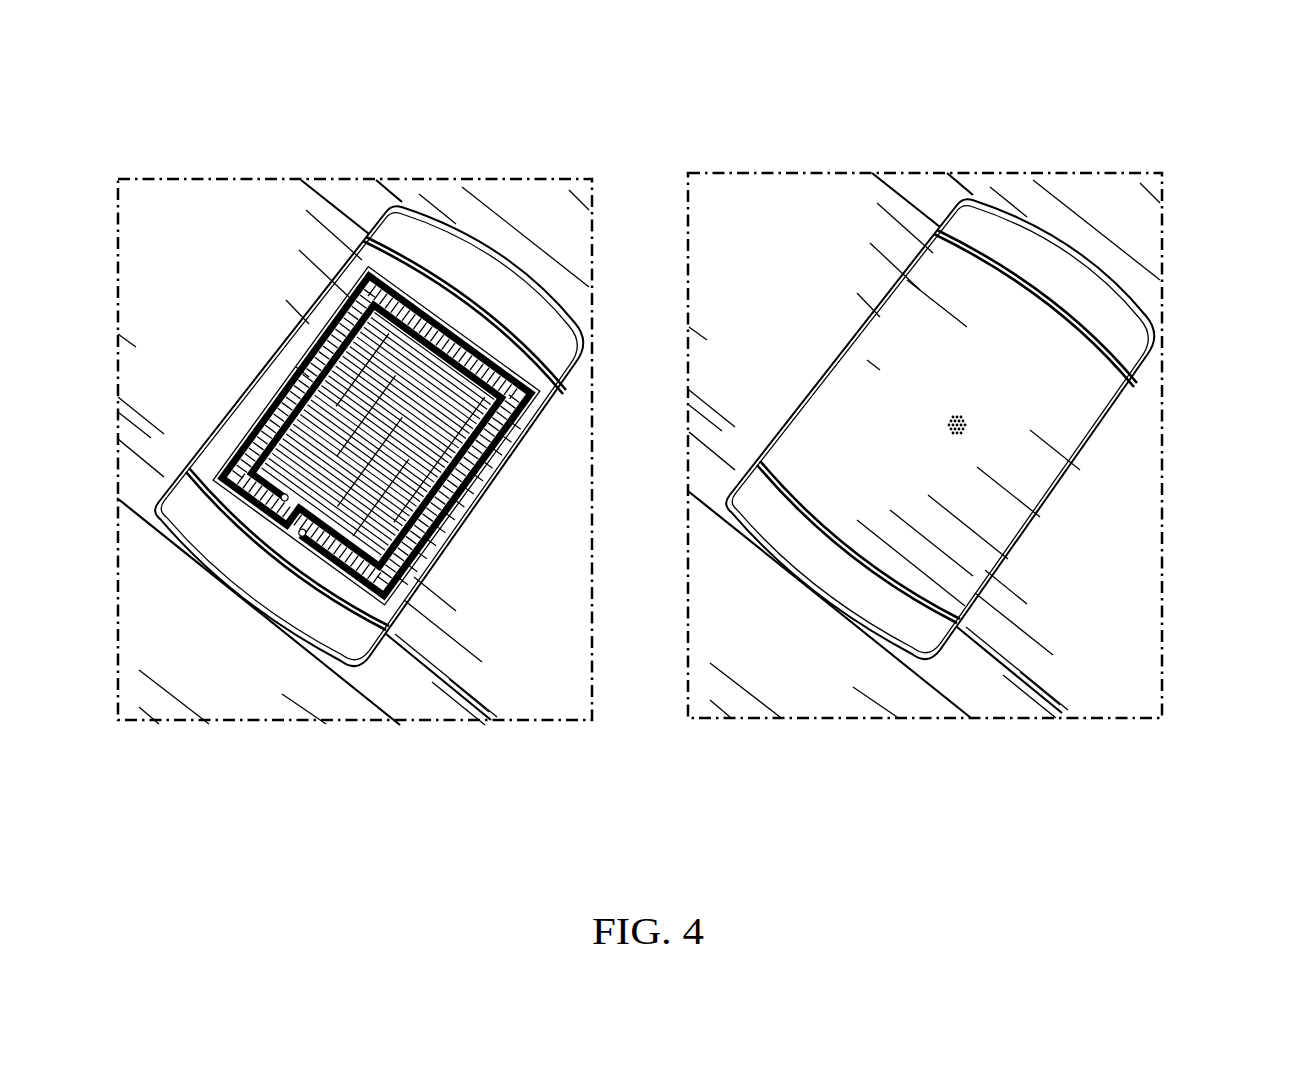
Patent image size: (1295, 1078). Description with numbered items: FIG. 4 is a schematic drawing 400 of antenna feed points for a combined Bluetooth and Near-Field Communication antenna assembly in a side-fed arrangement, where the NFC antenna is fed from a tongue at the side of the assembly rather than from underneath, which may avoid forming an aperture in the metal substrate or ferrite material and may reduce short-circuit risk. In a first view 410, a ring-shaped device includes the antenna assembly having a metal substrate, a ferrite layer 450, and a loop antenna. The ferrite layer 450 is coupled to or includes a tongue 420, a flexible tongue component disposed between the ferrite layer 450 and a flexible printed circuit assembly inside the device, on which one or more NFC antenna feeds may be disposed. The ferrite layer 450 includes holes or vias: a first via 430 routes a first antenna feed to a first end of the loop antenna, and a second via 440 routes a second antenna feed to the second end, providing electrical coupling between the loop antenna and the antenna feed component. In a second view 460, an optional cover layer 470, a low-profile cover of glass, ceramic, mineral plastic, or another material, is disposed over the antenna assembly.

The wearable device views 400 is at (1207, 64).
The first view 410 is at (354, 418).
The tongue 420 is at (268, 568).
The first via 430 is at (280, 500).
The second via 440 is at (302, 537).
The ferrite layer 450 is at (275, 545).
The second view 460 is at (925, 414).
The cover layer 470 is at (877, 360).